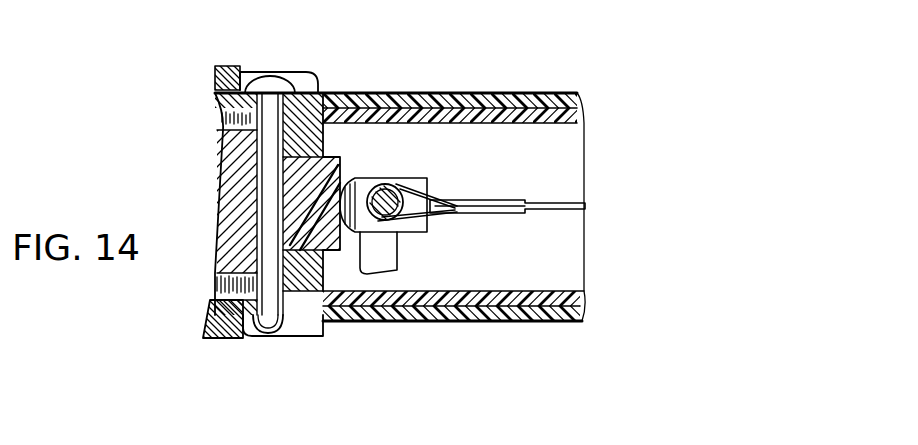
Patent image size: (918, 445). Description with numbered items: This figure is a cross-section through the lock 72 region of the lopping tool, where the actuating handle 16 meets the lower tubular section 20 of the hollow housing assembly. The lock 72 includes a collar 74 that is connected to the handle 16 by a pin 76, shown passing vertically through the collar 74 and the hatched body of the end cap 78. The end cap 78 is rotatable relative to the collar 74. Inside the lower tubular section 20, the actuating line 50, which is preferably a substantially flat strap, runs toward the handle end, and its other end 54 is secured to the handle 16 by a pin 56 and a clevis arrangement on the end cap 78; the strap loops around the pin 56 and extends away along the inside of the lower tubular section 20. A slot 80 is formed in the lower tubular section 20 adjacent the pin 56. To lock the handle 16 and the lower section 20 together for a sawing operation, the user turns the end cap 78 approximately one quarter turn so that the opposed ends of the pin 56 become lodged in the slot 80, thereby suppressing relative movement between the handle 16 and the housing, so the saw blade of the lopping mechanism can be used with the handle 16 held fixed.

The actuating handle 16 is at (393, 93).
The lower tubular section 20 is at (528, 112).
The actuating line 50 is at (497, 205).
The other end of actuating line 54 is at (440, 222).
The pin 56 is at (393, 190).
The lock 72 is at (301, 64).
The collar 74 is at (217, 67).
The pin 76 is at (272, 80).
The end cap 78 is at (238, 161).
The slot 80 is at (383, 256).